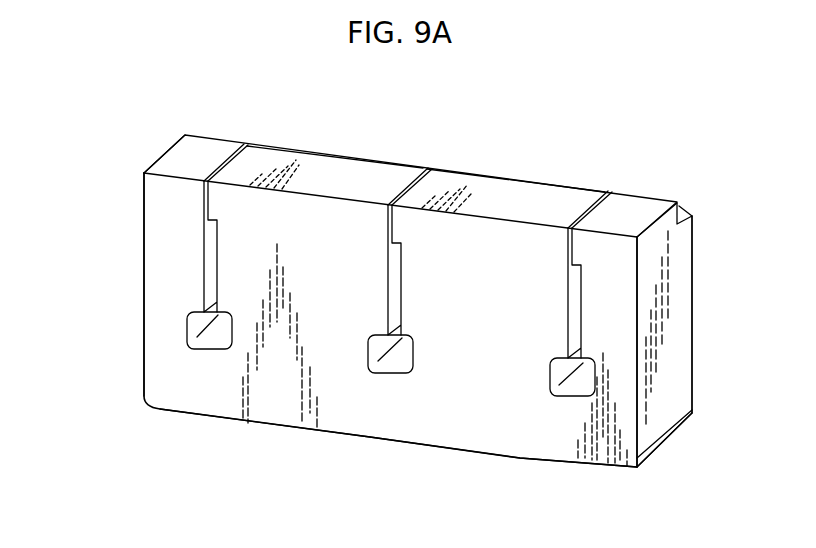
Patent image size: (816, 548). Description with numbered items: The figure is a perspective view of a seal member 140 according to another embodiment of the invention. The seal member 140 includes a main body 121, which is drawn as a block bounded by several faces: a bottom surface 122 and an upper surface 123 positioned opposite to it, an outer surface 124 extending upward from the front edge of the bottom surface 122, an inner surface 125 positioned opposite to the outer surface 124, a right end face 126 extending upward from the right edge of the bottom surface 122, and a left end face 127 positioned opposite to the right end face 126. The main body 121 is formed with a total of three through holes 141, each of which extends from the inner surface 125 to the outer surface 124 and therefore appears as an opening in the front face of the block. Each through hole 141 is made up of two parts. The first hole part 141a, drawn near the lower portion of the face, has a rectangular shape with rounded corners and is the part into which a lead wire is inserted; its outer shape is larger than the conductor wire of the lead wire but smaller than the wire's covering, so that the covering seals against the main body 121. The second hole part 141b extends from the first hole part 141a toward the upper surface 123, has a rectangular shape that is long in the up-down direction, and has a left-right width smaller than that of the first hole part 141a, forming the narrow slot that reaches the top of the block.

The seal member 140 is at (676, 145).
The main body 121 is at (304, 149).
The bottom surface 122 is at (343, 433).
The upper surface 123 is at (487, 198).
The outer surface 124 is at (158, 227).
The inner surface 125 is at (692, 302).
The right end face 126 is at (678, 352).
The left end face 127 is at (143, 278).
The through hole 141 is at (308, 356).
The first hole part 141a is at (200, 325).
The second hole part 141b is at (209, 287).